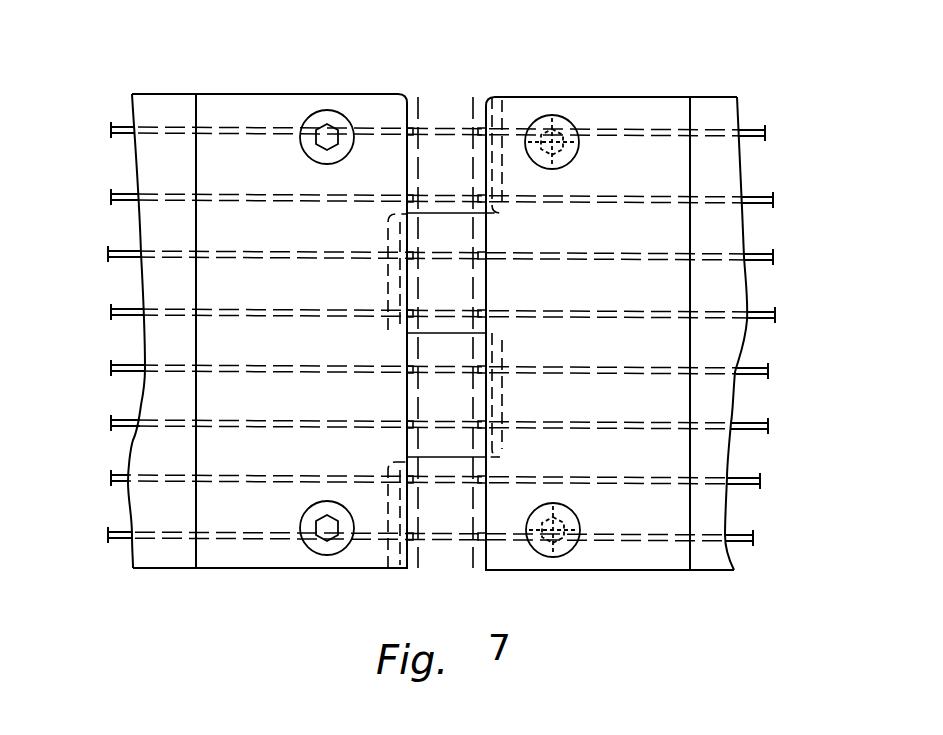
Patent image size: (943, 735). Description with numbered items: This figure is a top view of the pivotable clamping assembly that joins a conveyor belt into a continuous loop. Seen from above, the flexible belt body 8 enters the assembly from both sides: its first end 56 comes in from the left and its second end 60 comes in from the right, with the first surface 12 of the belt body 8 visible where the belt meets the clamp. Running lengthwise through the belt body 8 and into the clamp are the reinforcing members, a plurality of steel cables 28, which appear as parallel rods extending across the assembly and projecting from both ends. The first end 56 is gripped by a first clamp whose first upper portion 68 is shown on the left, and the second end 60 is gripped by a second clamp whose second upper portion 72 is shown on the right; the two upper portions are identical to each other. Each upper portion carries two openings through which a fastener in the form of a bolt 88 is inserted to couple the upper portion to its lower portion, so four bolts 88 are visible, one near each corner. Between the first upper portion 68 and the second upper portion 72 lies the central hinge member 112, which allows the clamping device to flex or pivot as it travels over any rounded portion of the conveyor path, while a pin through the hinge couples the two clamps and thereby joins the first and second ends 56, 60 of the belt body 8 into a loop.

The flexible belt body 8 is at (648, 66).
The first surface 12 is at (178, 183).
The steel cables 28 is at (105, 256).
The first end 56 is at (208, 95).
The second end 60 is at (722, 97).
The first upper portion 68 is at (305, 295).
The second upper portion 72 is at (632, 297).
The bolt 88 is at (330, 101).
The central hinge member 112 is at (456, 93).